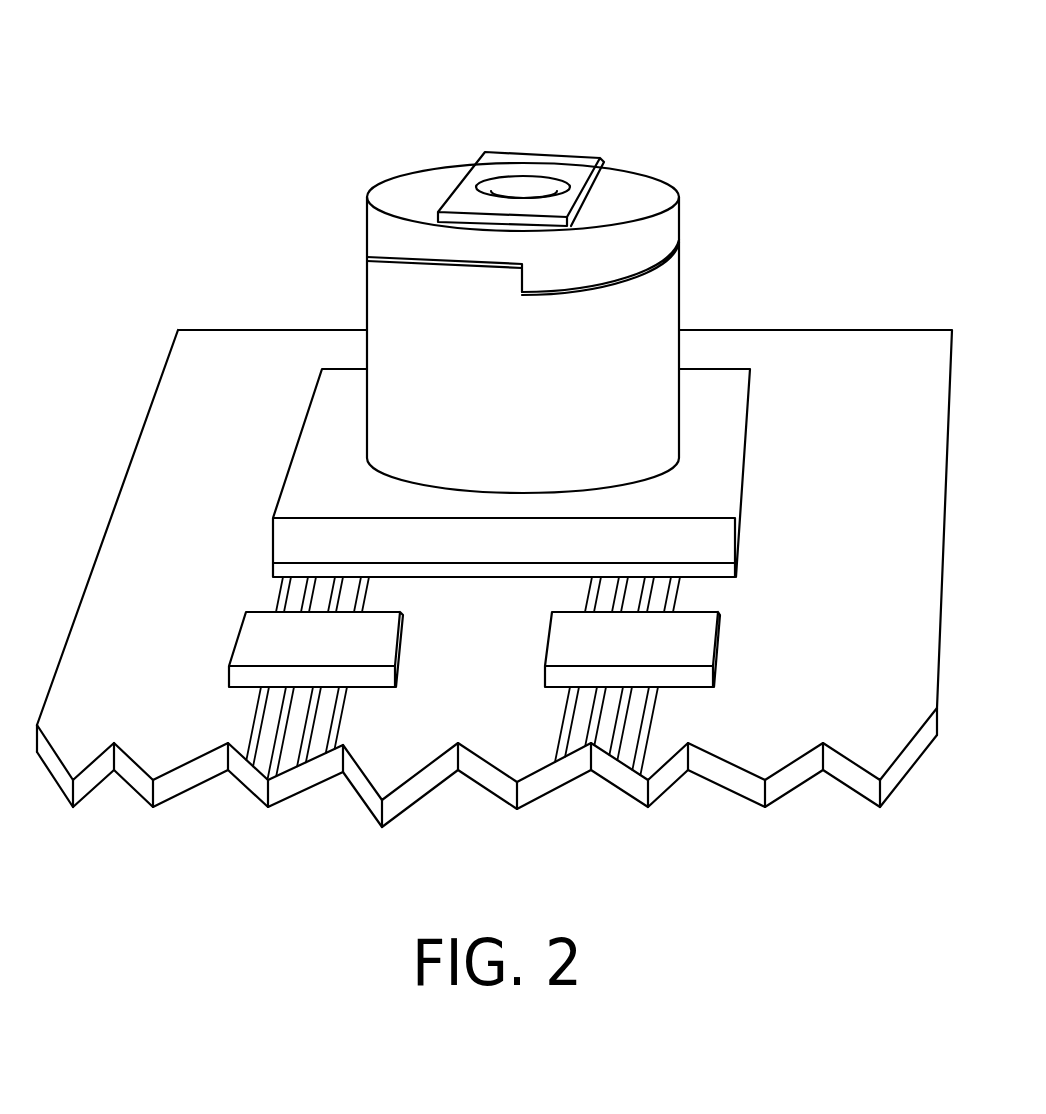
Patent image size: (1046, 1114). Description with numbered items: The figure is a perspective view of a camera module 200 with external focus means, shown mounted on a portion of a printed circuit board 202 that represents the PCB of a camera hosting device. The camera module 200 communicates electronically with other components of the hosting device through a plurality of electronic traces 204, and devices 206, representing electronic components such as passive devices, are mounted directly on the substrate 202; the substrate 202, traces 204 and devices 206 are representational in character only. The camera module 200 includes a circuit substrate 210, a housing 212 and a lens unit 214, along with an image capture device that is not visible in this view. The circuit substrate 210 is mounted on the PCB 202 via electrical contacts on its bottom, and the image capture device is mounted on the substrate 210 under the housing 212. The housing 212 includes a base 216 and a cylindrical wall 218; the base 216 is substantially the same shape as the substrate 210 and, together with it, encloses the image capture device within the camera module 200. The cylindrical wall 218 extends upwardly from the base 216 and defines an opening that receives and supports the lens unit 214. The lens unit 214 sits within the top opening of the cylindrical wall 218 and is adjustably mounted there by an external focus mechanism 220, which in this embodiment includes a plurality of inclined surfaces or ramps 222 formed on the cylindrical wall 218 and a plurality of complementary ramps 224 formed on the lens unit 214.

The camera module 200 is at (796, 124).
The printed circuit board 202 is at (165, 665).
The electronic traces 204 is at (574, 598).
The devices 206 is at (337, 662).
The circuit substrate 210 is at (717, 570).
The housing 212 is at (328, 348).
The lens unit 214 is at (668, 218).
The base 216 is at (707, 477).
The cylindrical wall 218 is at (620, 335).
The external focus mechanism 220 is at (575, 291).
The inclined surfaces (ramps) 222 is at (382, 262).
The complementary ramps 224 is at (460, 262).